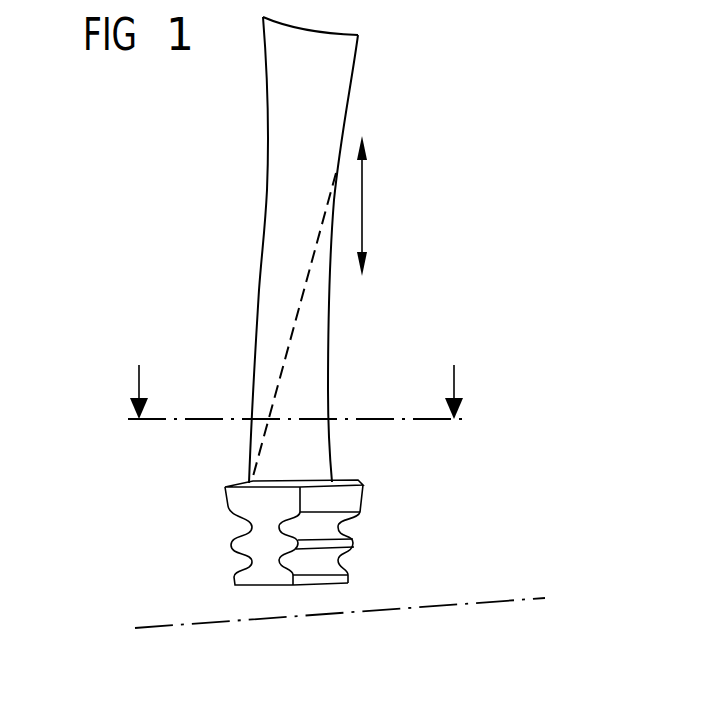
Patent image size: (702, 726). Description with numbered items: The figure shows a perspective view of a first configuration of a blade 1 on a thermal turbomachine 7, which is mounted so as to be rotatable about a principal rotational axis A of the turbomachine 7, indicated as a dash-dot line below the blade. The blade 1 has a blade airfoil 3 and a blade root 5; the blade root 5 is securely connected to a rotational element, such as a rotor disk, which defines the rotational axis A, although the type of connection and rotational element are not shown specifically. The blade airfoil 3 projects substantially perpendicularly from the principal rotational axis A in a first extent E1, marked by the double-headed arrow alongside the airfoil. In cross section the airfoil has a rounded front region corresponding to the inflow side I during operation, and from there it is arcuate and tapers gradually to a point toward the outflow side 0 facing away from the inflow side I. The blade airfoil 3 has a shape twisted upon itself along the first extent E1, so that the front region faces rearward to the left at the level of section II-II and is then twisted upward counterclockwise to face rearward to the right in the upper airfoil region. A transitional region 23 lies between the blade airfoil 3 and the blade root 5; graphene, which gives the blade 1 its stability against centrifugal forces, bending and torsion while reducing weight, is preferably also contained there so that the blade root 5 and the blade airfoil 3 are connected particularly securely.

The blade 1 is at (417, 100).
The blade airfoil 3 is at (318, 331).
The outflow side 0 is at (260, 243).
The thermal turbomachine 7 is at (486, 135).
The blade root 5 is at (354, 545).
The transitional region 23 is at (209, 470).
The first extent E1 is at (362, 203).
The inflow side I is at (288, 347).
The principal rotational axis A is at (510, 597).
The section II- II is at (297, 373).